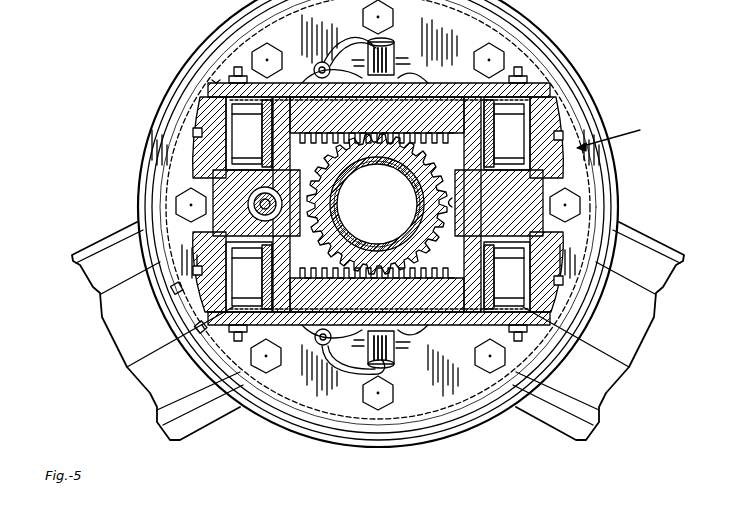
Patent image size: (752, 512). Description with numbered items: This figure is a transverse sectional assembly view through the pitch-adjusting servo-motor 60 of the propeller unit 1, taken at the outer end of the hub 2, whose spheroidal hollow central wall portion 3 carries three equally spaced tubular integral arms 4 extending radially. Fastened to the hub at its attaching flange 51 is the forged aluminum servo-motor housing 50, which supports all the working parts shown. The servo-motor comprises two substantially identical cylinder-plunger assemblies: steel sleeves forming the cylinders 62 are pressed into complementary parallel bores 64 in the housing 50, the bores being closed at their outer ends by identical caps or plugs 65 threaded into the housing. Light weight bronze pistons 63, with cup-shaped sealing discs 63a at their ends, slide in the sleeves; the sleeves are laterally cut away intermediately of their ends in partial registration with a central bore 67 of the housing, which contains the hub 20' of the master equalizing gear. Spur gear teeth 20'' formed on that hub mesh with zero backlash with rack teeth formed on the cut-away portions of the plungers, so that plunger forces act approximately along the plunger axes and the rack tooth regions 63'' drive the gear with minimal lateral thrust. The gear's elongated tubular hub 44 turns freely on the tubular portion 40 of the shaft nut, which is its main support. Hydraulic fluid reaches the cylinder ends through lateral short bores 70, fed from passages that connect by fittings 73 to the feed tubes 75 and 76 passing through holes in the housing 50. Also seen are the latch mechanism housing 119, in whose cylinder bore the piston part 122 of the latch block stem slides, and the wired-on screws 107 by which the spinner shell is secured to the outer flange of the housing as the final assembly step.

The apparatus 1 is at (606, 66).
The hub 2 is at (527, 410).
The central wall portion 3 is at (617, 206).
The tubular integral arms 4 is at (100, 253).
The hub of the master gear 20' is at (379, 204).
The spur gear teeth 20'' is at (377, 204).
The tubular portion 40 is at (377, 204).
The elongated tubular hub 44 is at (338, 203).
The servo-motor housing 50 is at (520, 100).
The attaching flange 51 is at (442, 399).
The pitch-adjusting servo-motor 60 is at (617, 135).
The cylinders 62 is at (280, 97).
The pistons 63 is at (383, 190).
The rack wall 63'' is at (367, 204).
The cup-shaped sealing discs 63a is at (577, 175).
The parallel bores 64 is at (300, 83).
The caps or plugs 65 is at (193, 143).
The central bore 67 is at (496, 203).
The lateral short bores 70 is at (378, 204).
The fittings 73 is at (392, 48).
The feed tube 75 is at (357, 26).
The feed tube 76 is at (342, 380).
The wired-on screws 107 is at (200, 330).
The latch mechanism housing 119 is at (262, 204).
The piston part 122 is at (262, 207).